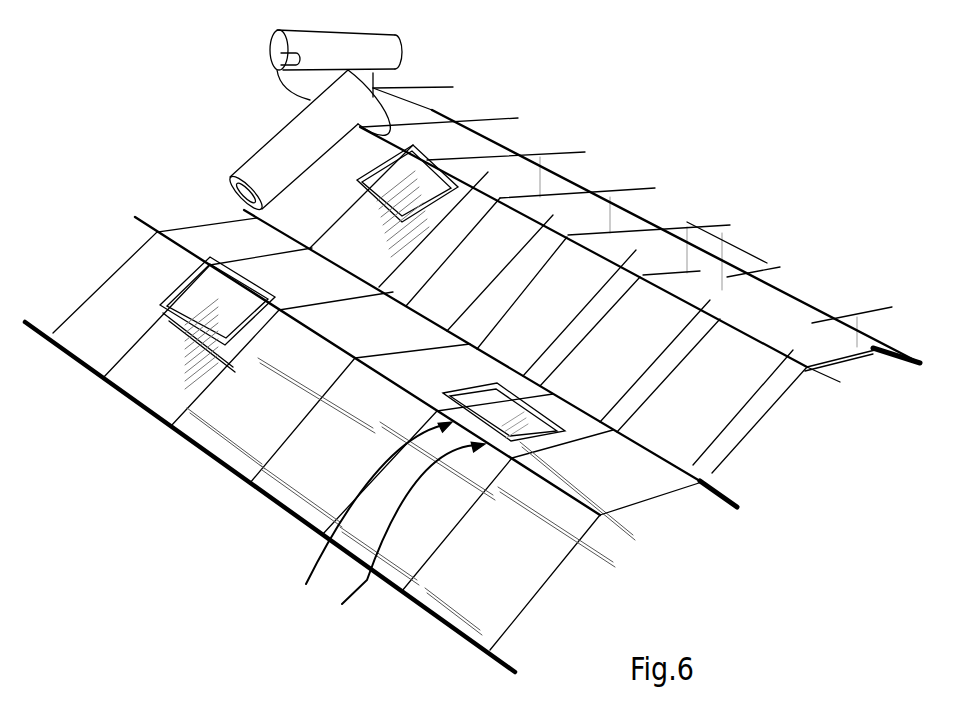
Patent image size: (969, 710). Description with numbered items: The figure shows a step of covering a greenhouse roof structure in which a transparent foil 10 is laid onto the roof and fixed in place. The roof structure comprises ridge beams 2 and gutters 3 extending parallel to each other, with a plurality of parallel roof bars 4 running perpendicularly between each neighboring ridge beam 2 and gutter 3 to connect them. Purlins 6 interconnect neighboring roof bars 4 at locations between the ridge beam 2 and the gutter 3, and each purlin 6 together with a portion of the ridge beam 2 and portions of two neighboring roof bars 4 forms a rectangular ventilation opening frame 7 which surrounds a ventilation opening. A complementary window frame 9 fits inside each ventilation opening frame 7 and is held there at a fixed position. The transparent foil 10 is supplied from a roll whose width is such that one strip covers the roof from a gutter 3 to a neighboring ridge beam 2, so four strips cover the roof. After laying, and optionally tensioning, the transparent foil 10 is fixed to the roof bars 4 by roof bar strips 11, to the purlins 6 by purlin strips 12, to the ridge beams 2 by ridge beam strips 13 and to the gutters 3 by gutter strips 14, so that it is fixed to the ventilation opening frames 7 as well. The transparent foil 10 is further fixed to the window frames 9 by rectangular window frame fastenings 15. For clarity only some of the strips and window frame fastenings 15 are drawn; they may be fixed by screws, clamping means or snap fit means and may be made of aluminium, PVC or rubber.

The ridge beam 2 is at (818, 370).
The gutter 3 is at (737, 491).
The roof bar 4 is at (680, 493).
The purlin 6 is at (768, 300).
The ventilation opening frame 7 is at (372, 513).
The window frame 9 is at (406, 535).
The transparent foil 10 is at (282, 71).
The roof bar strip 11 is at (847, 313).
The purlin strip 12 is at (320, 238).
The ridge beam strip 13 is at (595, 547).
The gutter strip 14 is at (453, 618).
The window frame fastening 15 is at (565, 433).